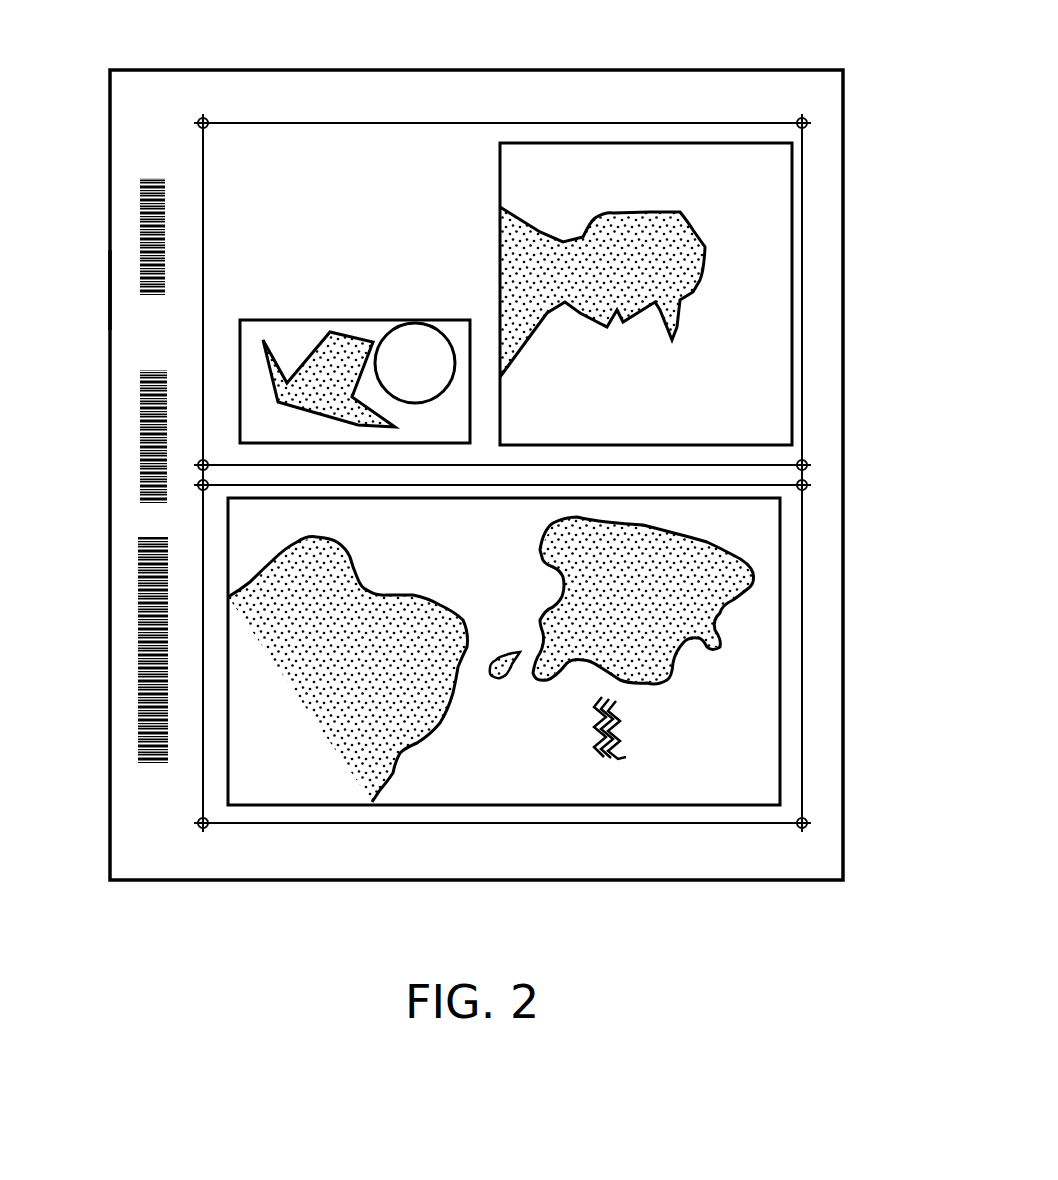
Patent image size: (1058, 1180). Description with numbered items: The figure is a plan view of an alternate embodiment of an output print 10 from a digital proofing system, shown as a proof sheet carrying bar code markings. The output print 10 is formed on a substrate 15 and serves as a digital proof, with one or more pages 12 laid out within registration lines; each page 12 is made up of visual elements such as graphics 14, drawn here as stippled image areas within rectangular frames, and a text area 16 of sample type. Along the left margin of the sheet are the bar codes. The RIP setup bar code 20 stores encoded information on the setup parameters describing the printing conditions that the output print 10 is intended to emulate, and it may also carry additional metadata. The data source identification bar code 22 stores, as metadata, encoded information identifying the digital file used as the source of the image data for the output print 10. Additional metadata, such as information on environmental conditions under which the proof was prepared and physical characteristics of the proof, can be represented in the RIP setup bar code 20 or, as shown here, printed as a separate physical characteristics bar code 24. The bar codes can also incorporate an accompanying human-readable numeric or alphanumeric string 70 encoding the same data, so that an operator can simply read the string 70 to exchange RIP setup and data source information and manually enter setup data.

The output print 10 is at (108, 213).
The page 12 is at (805, 237).
The graphics 14 is at (643, 152).
The substrate 15 is at (120, 288).
The text area 16 is at (455, 158).
The RIP setup bar code 20 is at (140, 598).
The data source identification bar code 22 is at (140, 418).
The physical characteristics bar code 24 is at (140, 180).
The numeric or alphanumeric string 70 is at (176, 382).